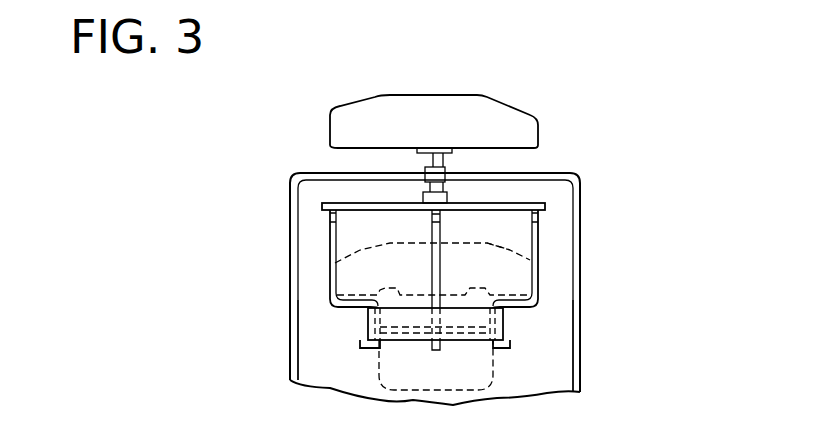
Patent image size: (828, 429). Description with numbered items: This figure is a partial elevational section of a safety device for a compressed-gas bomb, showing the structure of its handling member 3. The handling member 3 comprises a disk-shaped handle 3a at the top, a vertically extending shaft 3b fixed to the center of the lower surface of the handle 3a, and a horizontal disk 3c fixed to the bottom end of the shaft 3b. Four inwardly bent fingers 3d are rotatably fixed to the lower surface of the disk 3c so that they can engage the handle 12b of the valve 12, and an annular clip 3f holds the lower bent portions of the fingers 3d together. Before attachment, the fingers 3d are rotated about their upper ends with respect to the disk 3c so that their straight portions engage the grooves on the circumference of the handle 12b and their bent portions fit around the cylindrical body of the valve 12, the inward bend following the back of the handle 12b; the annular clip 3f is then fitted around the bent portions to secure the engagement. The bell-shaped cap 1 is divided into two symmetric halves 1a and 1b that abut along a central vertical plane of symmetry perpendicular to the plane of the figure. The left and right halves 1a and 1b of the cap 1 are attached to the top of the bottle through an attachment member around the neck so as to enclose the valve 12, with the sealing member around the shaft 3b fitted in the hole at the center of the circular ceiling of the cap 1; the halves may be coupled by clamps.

The bell-shaped cap 1 is at (582, 167).
The left half of the cap 1a is at (292, 220).
The right half of the cap 1b is at (575, 210).
The handling member 3 is at (434, 200).
The disk-shaped handle 3a is at (513, 118).
The vertically extending shaft 3b is at (433, 160).
The horizontal disk 3c is at (347, 203).
The inwardly bent fingers 3d is at (332, 255).
The annular clip 3f is at (392, 318).
The valve 12 is at (533, 345).
The handle of the valve 12b is at (510, 273).